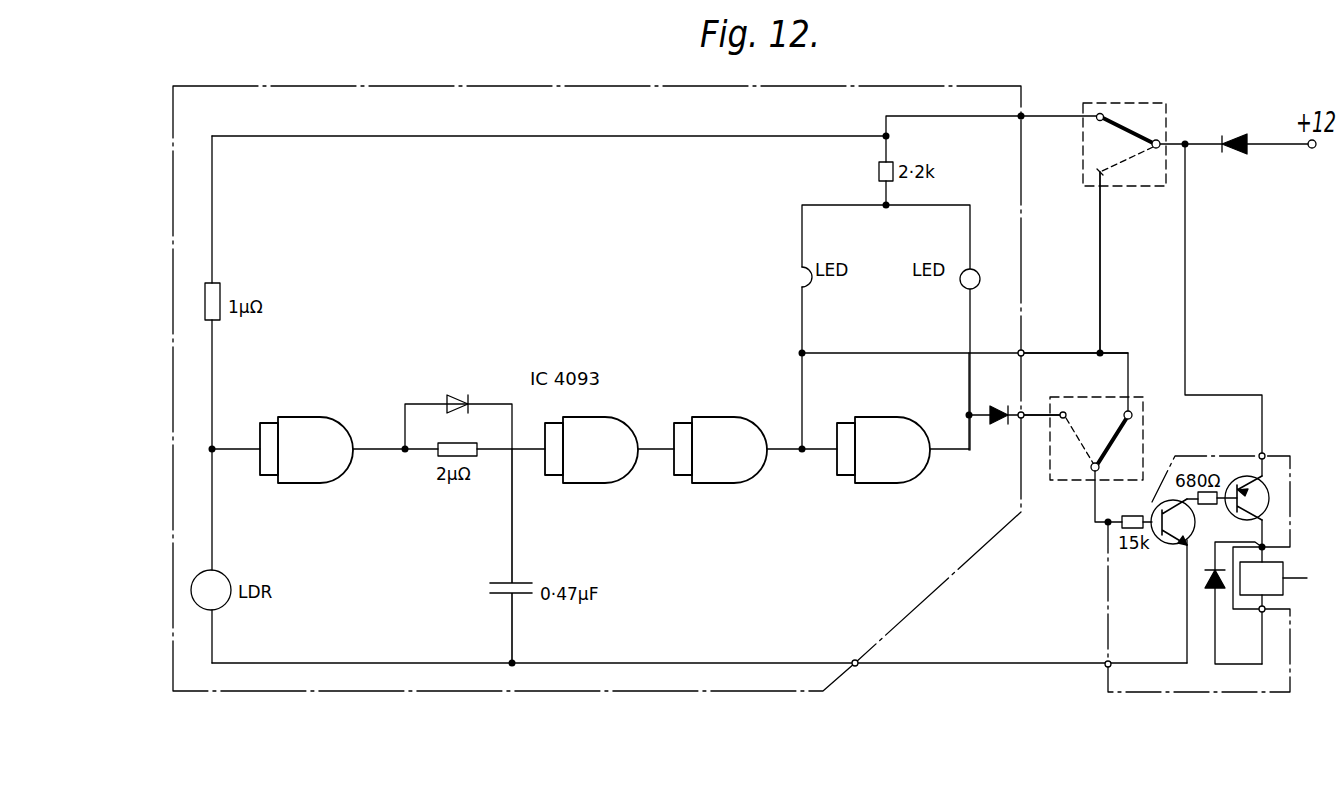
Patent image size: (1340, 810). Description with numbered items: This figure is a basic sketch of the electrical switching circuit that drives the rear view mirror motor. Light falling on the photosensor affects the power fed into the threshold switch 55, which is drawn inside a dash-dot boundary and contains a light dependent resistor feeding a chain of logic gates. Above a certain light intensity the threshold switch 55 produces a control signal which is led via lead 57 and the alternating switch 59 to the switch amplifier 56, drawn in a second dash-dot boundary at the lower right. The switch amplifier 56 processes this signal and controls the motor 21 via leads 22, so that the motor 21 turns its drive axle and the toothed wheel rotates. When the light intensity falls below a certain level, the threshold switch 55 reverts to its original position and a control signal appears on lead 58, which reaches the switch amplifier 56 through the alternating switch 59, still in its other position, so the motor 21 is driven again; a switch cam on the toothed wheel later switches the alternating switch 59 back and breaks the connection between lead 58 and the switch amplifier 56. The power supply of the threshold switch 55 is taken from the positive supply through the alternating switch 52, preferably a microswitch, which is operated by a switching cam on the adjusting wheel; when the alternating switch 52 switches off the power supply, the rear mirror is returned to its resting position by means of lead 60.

The alternating switch 52 is at (1142, 127).
The lead 60 is at (1102, 285).
The lead 57 is at (1055, 352).
The lead 58 is at (1037, 413).
The alternating switch 59 is at (1098, 447).
The threshold switch 55 is at (407, 642).
The switch amplifier 56 is at (1130, 638).
The leads 22 is at (1263, 555).
The motor 21 is at (1275, 588).